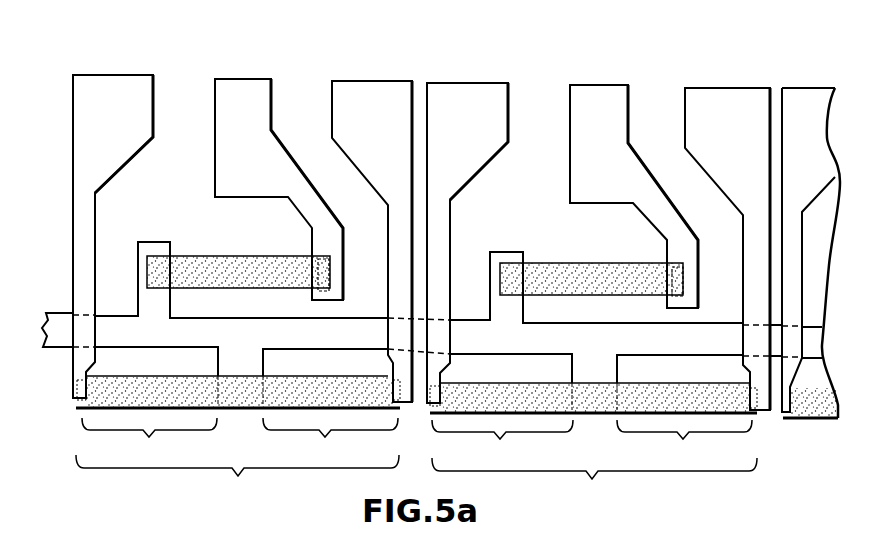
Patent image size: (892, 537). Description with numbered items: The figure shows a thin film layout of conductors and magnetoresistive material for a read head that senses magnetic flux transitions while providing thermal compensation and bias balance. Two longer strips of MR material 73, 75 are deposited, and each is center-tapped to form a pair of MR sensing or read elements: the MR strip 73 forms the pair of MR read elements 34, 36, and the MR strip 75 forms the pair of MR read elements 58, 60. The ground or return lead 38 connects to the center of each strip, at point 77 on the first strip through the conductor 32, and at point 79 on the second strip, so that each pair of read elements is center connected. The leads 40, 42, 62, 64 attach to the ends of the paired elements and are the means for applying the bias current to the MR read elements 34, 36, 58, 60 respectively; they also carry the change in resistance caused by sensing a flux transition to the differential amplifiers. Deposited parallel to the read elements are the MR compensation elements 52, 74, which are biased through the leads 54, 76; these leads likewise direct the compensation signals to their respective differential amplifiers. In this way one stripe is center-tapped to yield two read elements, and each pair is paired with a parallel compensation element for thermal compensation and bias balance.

The conductor 32 is at (236, 368).
The MR read element 34 is at (150, 416).
The MR read element 36 is at (330, 417).
The ground or return lead 38 is at (60, 344).
The lead 40 is at (112, 88).
The lead 42 is at (356, 90).
The MR compensation element 52 is at (222, 262).
The lead 54 is at (240, 89).
The MR read element 58 is at (502, 423).
The MR read element 60 is at (684, 423).
The lead 62 is at (452, 92).
The lead 64 is at (714, 97).
The MR strip 73 is at (237, 478).
The MR compensation element 74 is at (574, 270).
The MR strip 75 is at (594, 484).
The lead 76 is at (588, 94).
The point 77 is at (234, 404).
The point 79 is at (598, 414).